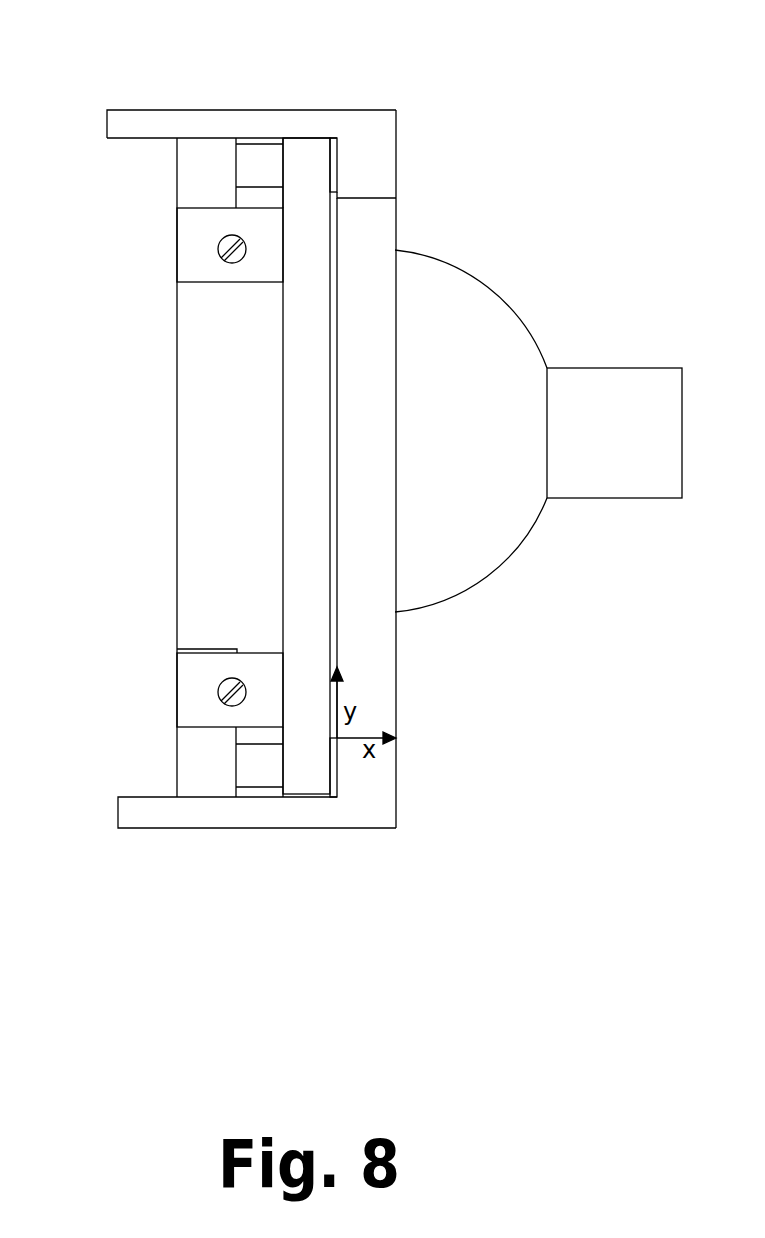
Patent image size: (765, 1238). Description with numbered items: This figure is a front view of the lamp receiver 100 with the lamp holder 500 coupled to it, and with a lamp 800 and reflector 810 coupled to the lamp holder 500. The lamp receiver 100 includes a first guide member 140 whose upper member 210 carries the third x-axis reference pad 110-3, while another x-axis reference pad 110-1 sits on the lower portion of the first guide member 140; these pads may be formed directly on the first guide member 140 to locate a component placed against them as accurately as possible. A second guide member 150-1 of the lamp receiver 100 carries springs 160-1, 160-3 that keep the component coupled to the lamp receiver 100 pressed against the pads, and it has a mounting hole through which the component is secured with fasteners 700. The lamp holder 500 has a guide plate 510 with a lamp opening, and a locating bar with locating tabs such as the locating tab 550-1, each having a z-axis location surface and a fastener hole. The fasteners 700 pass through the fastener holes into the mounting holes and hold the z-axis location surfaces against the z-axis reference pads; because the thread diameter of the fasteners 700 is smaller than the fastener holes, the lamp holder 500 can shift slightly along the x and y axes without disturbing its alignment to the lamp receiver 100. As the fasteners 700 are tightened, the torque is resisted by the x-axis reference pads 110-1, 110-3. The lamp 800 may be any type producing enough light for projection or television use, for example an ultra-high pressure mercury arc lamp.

The lamp receiver 100 is at (142, 98).
The upper member 210 is at (368, 140).
The first guide member 140 is at (420, 160).
The second guide member 150-1 is at (163, 776).
The guide plate 510 is at (307, 465).
The x-axis reference pad 110-3 is at (329, 165).
The x-axis reference pad 110-1 is at (330, 767).
The spring 160-3 is at (262, 142).
The spring 160-1 is at (259, 787).
The locating tab 550-1 is at (163, 264).
The fastener 700 is at (218, 250).
The lamp 800 is at (634, 446).
The reflector 810 is at (498, 300).
The lamp holder 500 is at (342, 453).